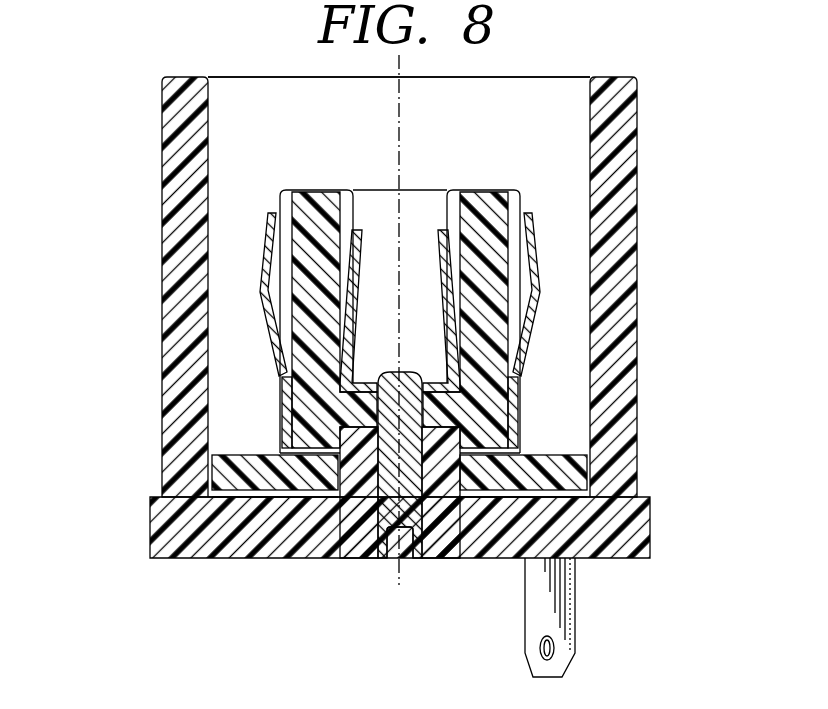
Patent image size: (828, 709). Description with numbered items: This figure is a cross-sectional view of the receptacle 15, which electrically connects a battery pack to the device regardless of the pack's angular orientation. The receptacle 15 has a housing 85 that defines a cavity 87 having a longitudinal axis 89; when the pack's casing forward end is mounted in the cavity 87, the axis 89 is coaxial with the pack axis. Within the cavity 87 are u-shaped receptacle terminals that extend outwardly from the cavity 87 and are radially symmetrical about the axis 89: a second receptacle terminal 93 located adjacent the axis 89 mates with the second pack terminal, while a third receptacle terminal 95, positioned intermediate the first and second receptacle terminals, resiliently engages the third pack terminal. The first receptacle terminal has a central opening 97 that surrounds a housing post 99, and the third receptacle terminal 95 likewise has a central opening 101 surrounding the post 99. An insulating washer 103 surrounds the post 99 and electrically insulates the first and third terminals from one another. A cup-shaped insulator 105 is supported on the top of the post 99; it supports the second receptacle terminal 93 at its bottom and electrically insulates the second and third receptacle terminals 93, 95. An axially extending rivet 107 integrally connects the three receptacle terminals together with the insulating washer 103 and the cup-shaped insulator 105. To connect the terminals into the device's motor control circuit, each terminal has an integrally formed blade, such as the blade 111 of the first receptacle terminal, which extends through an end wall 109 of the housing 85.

The receptacle 15 is at (151, 75).
The housing 85 is at (632, 103).
The cavity 87 is at (522, 100).
The longitudinal axis 89 is at (401, 88).
The second receptacle terminal 93 is at (357, 233).
The third receptacle terminal 95 is at (272, 228).
The central opening 97 is at (345, 500).
The housing post 99 is at (432, 498).
The central opening 101 is at (490, 423).
The insulating washer 103 is at (238, 447).
The cup-shaped insulator 105 is at (304, 197).
The rivet 107 is at (395, 548).
The end wall 109 is at (160, 508).
The blade 111 is at (576, 589).